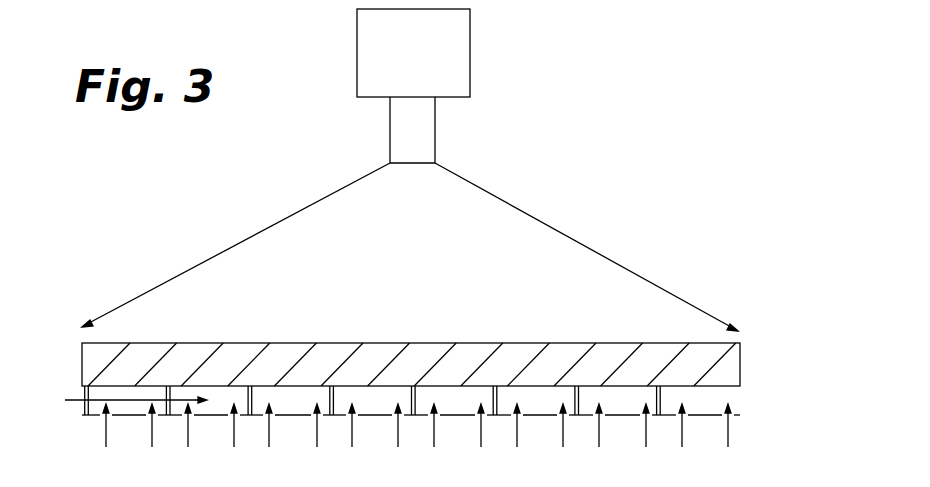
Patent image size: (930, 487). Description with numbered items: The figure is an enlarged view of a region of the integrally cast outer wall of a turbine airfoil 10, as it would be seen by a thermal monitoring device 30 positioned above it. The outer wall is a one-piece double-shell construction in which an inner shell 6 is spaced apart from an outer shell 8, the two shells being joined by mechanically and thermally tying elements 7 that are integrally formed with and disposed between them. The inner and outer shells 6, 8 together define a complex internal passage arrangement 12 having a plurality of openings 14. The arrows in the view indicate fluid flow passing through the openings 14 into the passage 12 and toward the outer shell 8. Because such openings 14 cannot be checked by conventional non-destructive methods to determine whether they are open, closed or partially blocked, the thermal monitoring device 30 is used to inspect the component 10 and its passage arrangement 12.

The thermal monitoring device 30 is at (491, 63).
The outer shell 8 is at (418, 343).
The turbine airfoil 10 is at (757, 403).
The tying elements 7 is at (253, 401).
The complex internal passage arrangement 12 is at (120, 401).
The inner shell 6 is at (707, 416).
The openings 14 is at (106, 428).